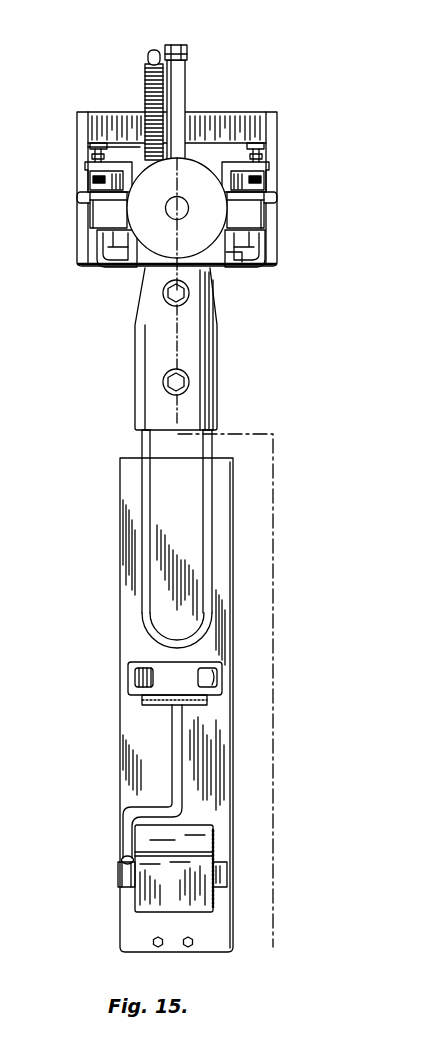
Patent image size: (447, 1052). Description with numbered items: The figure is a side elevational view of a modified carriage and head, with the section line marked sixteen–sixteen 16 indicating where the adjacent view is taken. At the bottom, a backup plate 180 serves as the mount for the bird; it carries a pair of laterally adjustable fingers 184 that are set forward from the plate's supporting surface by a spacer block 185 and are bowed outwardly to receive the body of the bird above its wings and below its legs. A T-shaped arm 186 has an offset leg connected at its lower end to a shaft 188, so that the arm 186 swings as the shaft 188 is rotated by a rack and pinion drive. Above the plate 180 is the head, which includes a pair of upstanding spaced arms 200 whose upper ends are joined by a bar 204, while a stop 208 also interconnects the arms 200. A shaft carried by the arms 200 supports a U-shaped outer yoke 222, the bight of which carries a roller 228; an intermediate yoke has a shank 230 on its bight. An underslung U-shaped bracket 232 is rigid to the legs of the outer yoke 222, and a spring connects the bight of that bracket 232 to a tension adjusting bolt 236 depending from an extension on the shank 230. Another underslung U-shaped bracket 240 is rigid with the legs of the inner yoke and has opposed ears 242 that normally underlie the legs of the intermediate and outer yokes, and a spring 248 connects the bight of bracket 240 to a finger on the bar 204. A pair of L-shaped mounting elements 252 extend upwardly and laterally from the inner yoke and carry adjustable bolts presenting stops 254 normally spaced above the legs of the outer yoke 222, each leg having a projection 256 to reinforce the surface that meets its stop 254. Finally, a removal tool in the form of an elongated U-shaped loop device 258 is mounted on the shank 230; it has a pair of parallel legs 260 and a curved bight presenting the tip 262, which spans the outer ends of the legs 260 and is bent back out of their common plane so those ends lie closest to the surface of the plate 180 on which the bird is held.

The section line 16- 16 is at (177, 19).
The backup plate 180 is at (232, 473).
The laterally adjustable fingers 184 is at (136, 677).
The spacer block 185 is at (132, 693).
The T-shaped arm 186 is at (172, 780).
The shaft 188 is at (117, 870).
The upstanding spaced arms 200 is at (277, 128).
The bar 204 is at (233, 118).
The stop 208 is at (140, 144).
The outer yoke 222 is at (107, 219).
The roller 228 is at (148, 247).
The shank 230 is at (186, 78).
The underslung U-shaped bracket 232 is at (222, 276).
The tension adjusting bolt 236 is at (184, 45).
The underslung U-shaped bracket 240 is at (231, 262).
The opposed ears 242 is at (246, 240).
The spring 248 is at (150, 68).
The L-shaped mounting elements 252 is at (269, 165).
The stops 254 is at (268, 181).
The projection 256 is at (272, 197).
The U-shaped loop device 258 is at (133, 443).
The legs 260 is at (149, 509).
The tip 262 is at (162, 639).